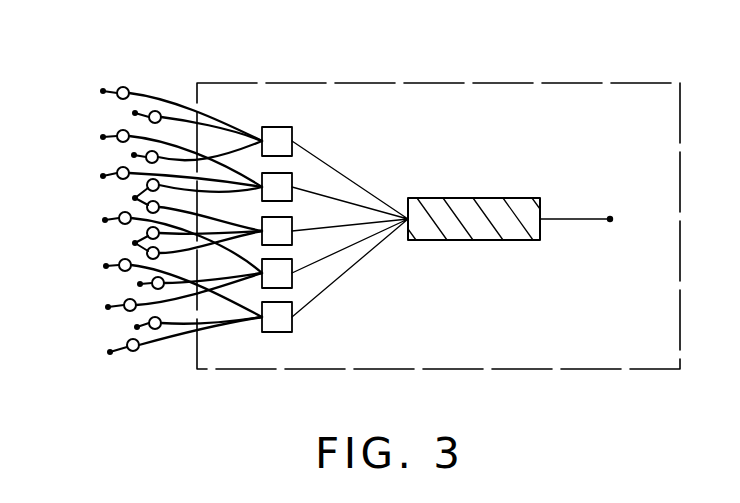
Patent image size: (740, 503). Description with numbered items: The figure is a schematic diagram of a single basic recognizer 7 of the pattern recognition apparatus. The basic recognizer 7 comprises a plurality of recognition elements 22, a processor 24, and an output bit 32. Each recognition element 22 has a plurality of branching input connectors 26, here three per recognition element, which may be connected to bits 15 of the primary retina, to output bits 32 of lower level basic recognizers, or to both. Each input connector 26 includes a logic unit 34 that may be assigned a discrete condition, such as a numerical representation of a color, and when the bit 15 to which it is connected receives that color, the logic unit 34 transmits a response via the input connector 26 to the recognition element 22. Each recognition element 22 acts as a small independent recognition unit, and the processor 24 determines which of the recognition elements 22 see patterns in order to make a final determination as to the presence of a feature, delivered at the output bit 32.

The basic recognizer 7 is at (240, 83).
The bit 15 is at (101, 91).
The recognition element 22 is at (299, 112).
The processor 24 is at (493, 183).
The input connector 26 is at (214, 117).
The output bit 32 is at (132, 114).
The logic unit 34 is at (124, 87).